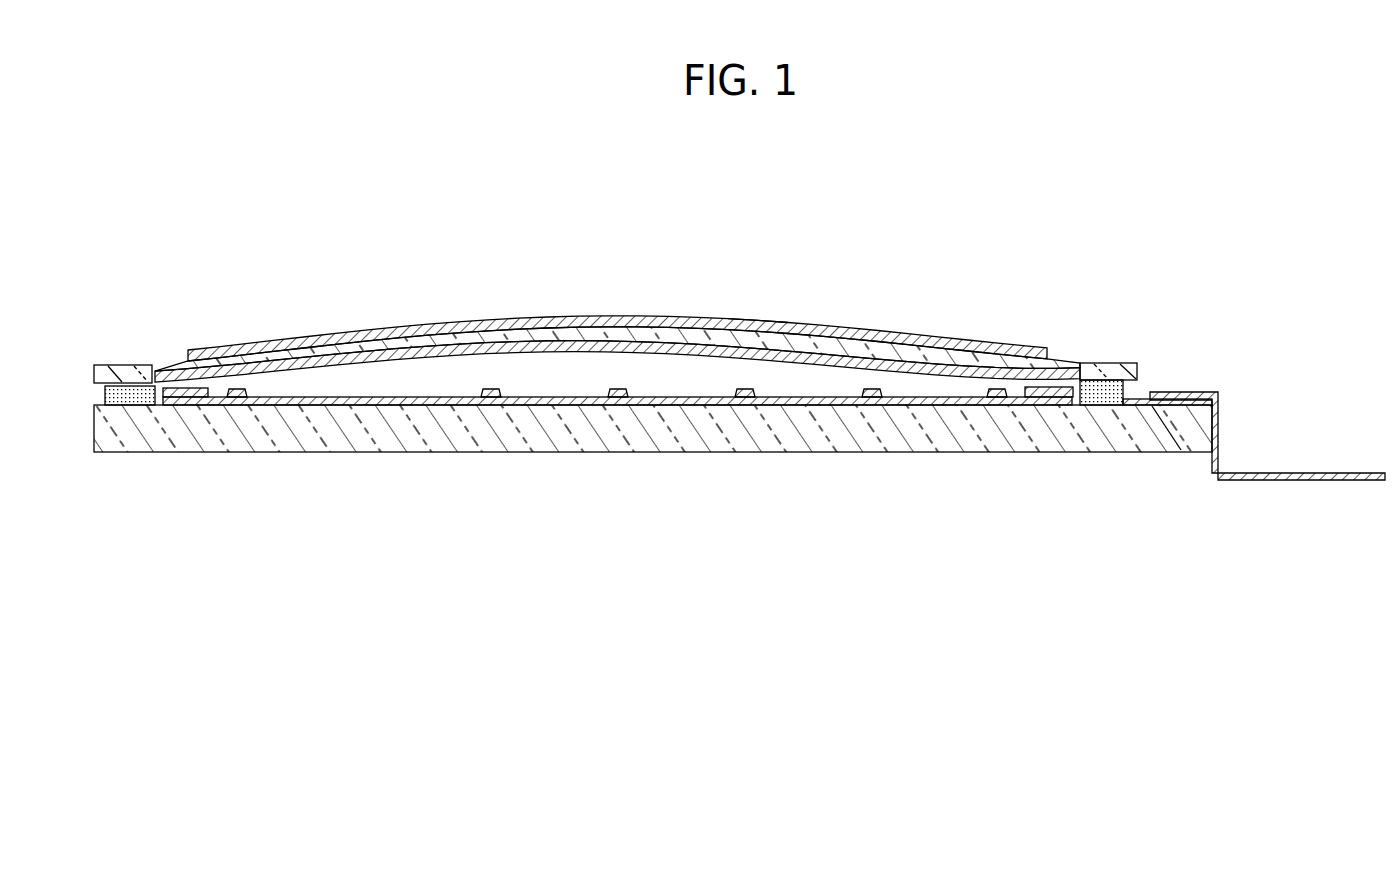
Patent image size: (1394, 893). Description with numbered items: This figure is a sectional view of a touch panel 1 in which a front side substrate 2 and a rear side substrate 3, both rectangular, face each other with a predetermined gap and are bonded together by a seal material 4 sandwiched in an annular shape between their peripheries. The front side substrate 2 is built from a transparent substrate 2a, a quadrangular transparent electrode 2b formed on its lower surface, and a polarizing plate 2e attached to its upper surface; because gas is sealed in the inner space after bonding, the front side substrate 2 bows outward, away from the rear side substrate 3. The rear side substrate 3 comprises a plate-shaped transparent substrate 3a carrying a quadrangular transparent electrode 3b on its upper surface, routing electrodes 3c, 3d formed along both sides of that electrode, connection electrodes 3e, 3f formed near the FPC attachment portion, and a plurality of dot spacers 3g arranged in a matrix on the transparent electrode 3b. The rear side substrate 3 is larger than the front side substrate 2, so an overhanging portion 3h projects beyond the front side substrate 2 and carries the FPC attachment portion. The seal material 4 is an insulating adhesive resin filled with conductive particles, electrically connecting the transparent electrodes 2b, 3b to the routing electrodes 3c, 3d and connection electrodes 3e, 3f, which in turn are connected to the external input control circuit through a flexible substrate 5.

The touch panel 1 is at (480, 302).
The front side substrate 2 is at (672, 306).
The transparent substrate 2a is at (551, 327).
The transparent electrode 2b is at (611, 338).
The polarizing plate 2e is at (755, 322).
The rear side substrate 3 is at (246, 457).
The transparent substrate 3a is at (270, 432).
The transparent electrode 3b is at (320, 405).
The routing electrode 3c is at (1194, 473).
The routing electrode 3d is at (1194, 473).
The connection electrode 3e is at (1194, 473).
The connection electrode 3f is at (1183, 403).
The dot spacer 3g is at (368, 397).
The overhanging portion 3h is at (1166, 424).
The seal material 4 is at (134, 408).
The flexible substrate 5 is at (1295, 481).